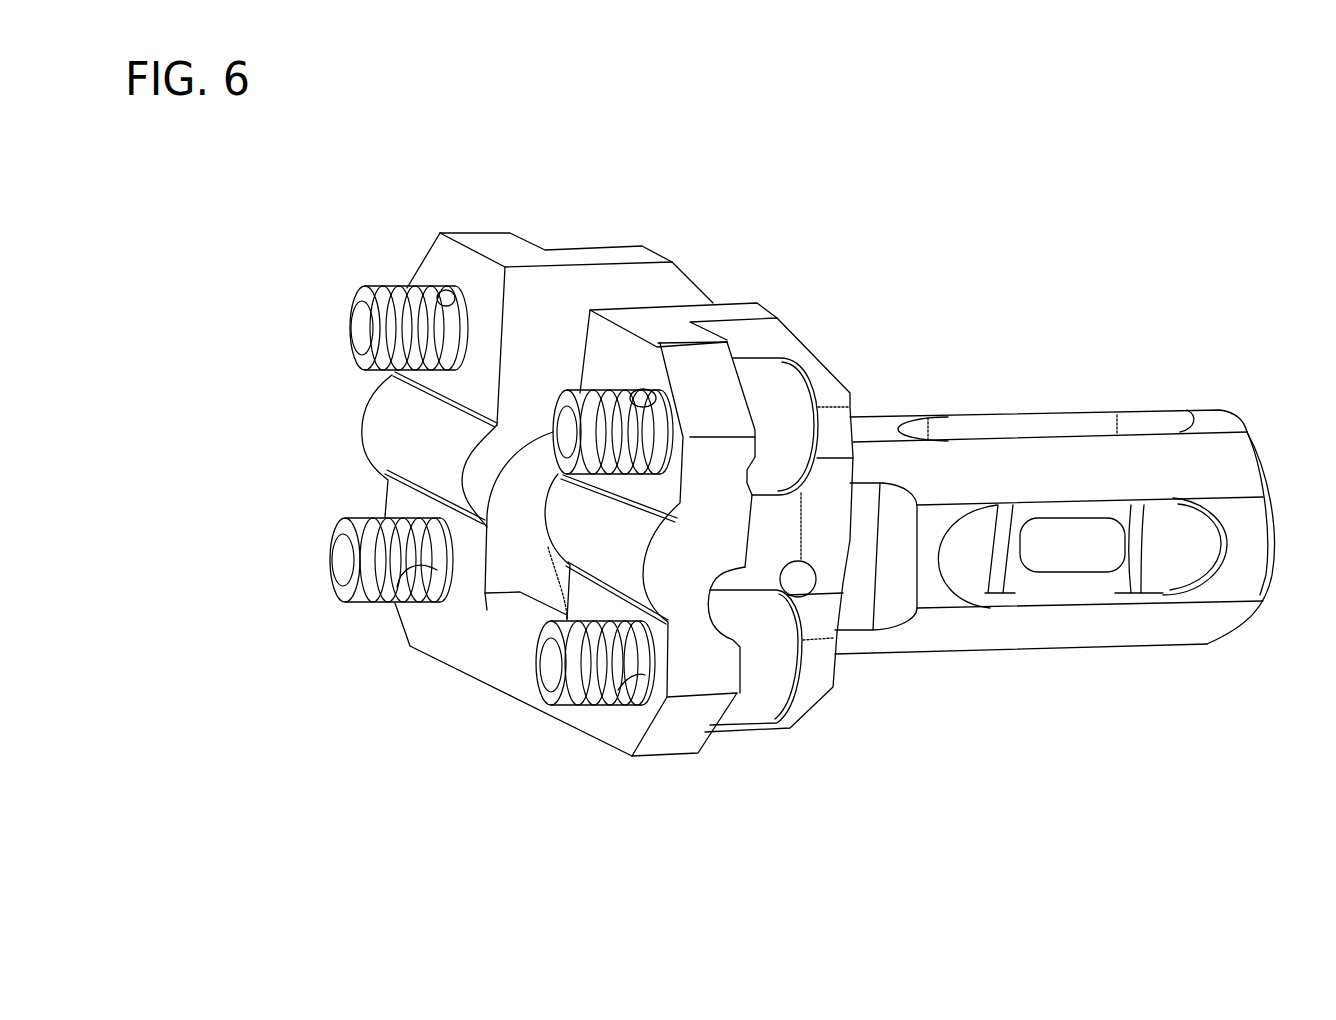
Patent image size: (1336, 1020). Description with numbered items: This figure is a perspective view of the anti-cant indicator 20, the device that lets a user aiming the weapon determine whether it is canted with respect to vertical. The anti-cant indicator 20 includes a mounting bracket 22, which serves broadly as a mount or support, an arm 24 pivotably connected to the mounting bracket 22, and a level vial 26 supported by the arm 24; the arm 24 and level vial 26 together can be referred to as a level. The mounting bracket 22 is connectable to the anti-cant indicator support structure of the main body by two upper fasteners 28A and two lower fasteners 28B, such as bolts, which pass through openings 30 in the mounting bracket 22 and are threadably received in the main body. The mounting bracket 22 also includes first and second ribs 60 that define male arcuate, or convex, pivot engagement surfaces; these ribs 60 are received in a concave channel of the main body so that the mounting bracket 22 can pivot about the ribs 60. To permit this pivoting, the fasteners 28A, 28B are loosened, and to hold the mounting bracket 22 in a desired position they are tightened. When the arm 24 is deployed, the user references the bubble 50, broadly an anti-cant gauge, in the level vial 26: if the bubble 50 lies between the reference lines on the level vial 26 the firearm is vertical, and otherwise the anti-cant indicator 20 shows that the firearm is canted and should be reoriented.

The anti-cant indicator 20 is at (1103, 184).
The mounting bracket 22 is at (810, 697).
The arm 24 is at (1057, 477).
The level vial 26 is at (1173, 560).
The upper fasteners 28A is at (368, 296).
The lower fasteners 28B is at (350, 522).
The openings 30 is at (437, 290).
The bubble 50 is at (1067, 573).
The ribs 60 is at (392, 420).